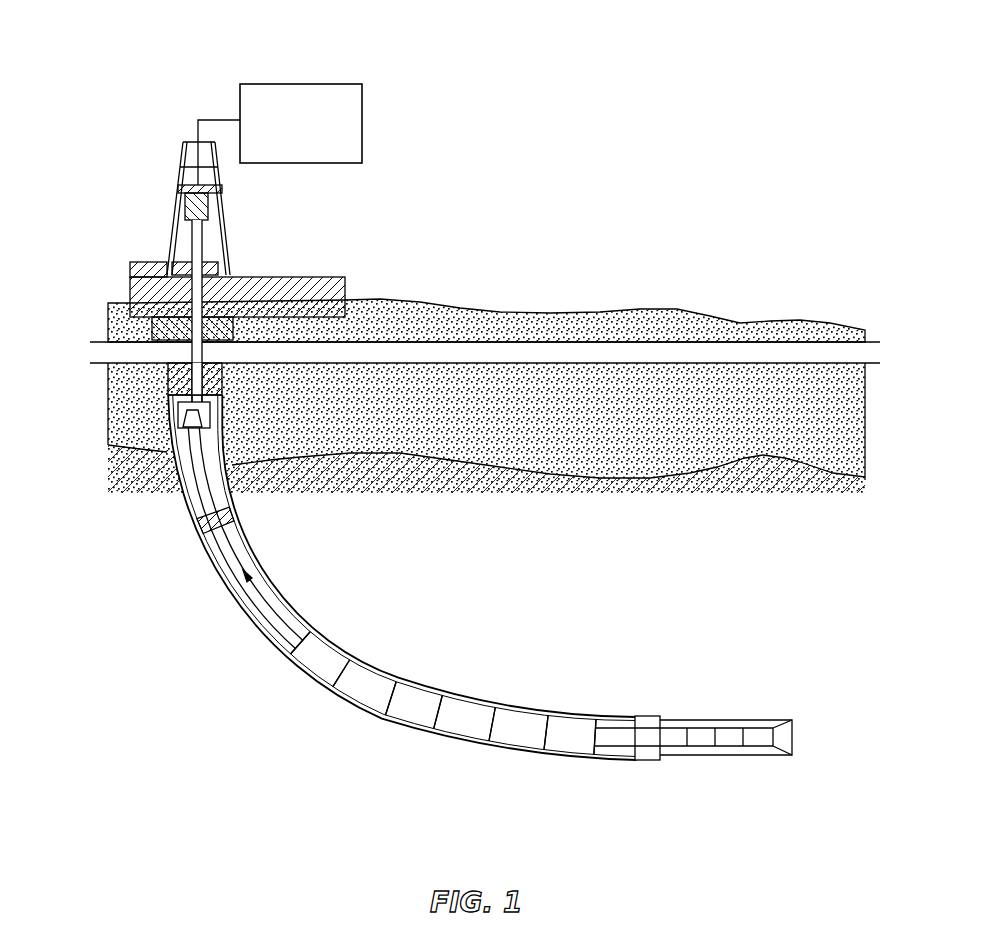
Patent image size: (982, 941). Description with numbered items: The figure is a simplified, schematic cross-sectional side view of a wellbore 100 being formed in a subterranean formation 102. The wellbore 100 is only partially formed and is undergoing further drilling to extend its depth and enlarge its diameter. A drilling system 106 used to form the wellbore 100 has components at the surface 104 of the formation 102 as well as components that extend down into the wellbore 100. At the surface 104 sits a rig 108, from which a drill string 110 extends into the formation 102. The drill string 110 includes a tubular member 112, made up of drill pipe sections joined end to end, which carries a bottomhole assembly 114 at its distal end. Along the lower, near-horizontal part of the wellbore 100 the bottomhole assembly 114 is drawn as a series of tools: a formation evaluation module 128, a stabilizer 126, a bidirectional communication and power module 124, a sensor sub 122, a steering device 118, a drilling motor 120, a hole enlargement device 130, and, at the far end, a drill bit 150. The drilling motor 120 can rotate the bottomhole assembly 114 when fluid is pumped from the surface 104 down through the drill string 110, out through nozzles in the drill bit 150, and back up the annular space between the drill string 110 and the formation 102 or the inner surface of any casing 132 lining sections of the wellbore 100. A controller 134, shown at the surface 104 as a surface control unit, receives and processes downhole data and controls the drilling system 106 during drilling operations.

The wellbore 100 is at (375, 660).
The subterranean formation 102 is at (568, 584).
The surface 104 is at (100, 340).
The drilling system 106 is at (135, 165).
The rig 108 is at (208, 262).
The drill string 110 is at (252, 578).
The tubular member 112 is at (232, 538).
The bottomhole assembly 114 is at (715, 752).
The steering device 118 is at (515, 722).
The drilling motor 120 is at (567, 725).
The sensor sub 122 is at (462, 712).
The bidirectional communication and power module 124 is at (412, 712).
The stabilizer 126 is at (360, 695).
The formation evaluation module 128 is at (313, 667).
The hole enlargement device 130 is at (645, 712).
The casing 132 is at (163, 425).
The controller 134 is at (276, 84).
The drill bit 150 is at (792, 737).